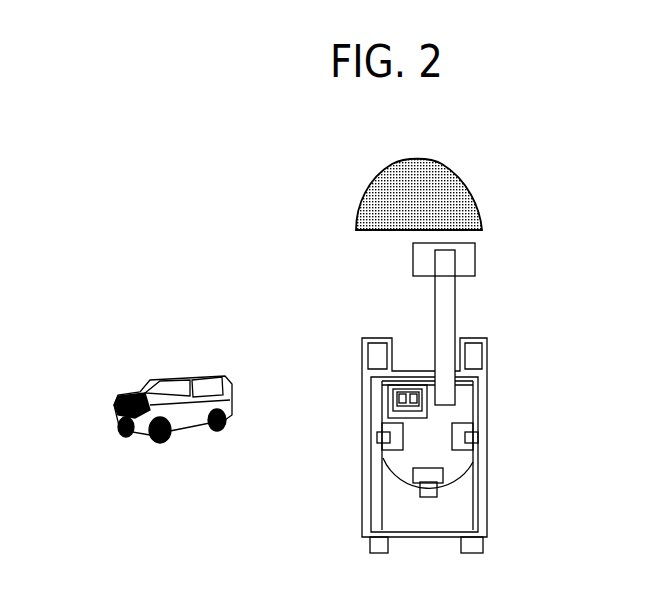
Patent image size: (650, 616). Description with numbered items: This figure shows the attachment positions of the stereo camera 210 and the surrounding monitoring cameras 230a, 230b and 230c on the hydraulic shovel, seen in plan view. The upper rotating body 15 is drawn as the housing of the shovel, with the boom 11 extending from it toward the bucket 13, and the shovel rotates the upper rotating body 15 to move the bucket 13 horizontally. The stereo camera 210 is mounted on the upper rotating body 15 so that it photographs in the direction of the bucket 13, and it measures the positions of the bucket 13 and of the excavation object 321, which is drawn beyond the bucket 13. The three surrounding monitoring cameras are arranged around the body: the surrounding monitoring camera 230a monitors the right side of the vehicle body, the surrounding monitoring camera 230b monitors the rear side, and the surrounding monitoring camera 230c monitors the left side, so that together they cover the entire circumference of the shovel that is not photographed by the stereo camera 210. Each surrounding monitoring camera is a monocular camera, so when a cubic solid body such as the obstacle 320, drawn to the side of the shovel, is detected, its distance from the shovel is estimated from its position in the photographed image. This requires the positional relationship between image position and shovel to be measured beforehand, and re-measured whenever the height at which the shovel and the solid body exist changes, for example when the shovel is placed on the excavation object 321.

The excavation object 321 is at (473, 172).
The bucket 13 is at (485, 250).
The boom 11 is at (489, 327).
The upper rotating body 15 is at (469, 445).
The stereo camera 210 is at (345, 368).
The surrounding monitoring camera 230a is at (526, 405).
The surrounding monitoring camera 230b is at (372, 533).
The surrounding monitoring camera 230c is at (318, 469).
The obstacle 320 is at (131, 409).